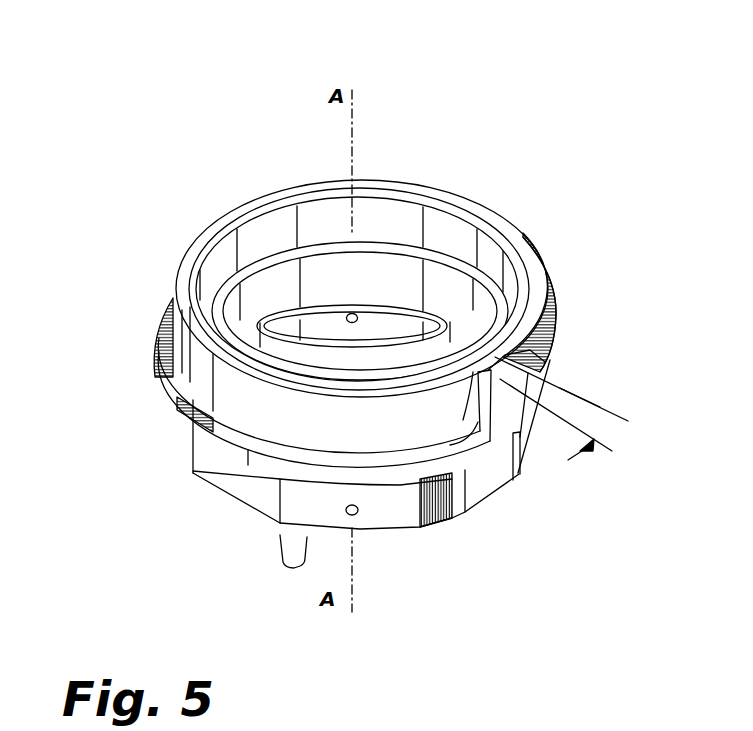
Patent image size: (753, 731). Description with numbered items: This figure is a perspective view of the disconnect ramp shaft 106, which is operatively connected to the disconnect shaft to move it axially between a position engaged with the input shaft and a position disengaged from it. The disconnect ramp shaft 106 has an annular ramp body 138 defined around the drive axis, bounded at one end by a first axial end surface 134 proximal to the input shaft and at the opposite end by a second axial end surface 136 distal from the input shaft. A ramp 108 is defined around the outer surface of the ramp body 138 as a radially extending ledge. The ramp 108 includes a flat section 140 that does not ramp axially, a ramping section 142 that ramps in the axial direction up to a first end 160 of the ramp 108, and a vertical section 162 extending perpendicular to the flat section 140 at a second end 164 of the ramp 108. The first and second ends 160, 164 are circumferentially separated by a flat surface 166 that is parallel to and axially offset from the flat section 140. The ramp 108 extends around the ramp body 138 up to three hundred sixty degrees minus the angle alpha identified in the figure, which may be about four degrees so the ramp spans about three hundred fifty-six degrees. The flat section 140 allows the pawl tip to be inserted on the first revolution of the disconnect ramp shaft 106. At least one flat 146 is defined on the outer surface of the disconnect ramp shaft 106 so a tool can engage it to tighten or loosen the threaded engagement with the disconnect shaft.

The disconnect ramp shaft 106 is at (168, 129).
The first axial end surface 134 is at (277, 186).
The ramp 108 is at (544, 225).
The ramping section 142 is at (540, 258).
The annular ramp body 138 is at (197, 376).
The flat section 140 is at (285, 447).
The second axial end surface 136 is at (280, 546).
The flat 146 is at (220, 470).
The first end 160 is at (548, 360).
The vertical section 162 is at (452, 440).
The second end 164 is at (440, 387).
The flat surface 166 is at (622, 416).